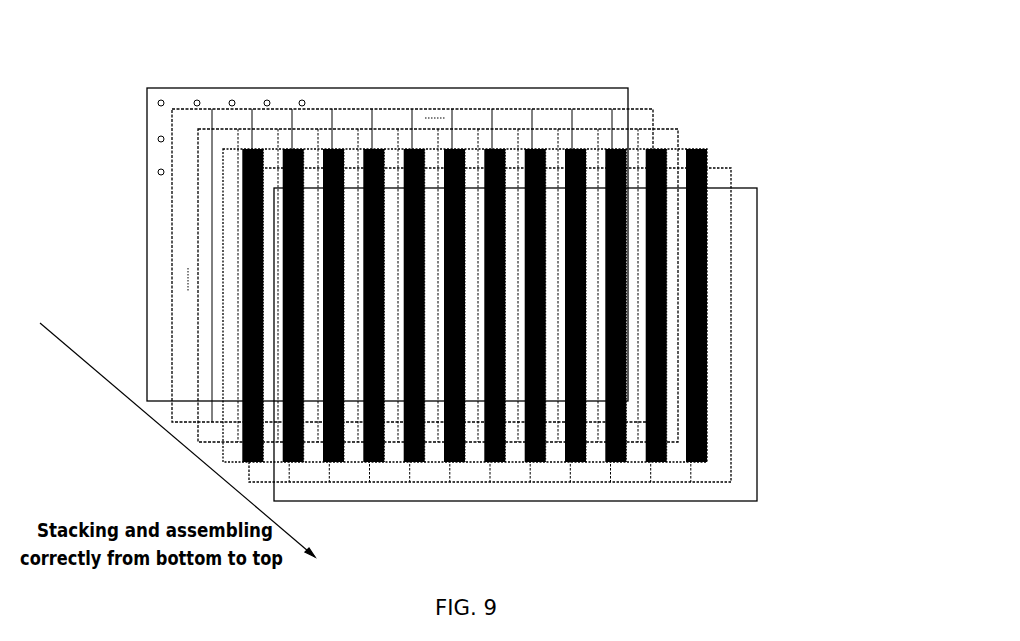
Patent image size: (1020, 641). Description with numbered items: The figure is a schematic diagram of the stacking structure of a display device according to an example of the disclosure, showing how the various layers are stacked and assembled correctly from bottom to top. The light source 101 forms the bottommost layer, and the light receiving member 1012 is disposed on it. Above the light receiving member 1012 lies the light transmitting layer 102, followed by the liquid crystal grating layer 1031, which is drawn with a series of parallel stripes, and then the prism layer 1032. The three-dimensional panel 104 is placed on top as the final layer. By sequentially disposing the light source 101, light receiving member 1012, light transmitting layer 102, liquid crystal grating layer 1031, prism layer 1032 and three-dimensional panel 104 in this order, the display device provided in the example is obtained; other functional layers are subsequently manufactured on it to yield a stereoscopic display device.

The light source 101 is at (515, 88).
The light receiving member 1012 is at (635, 115).
The light transmitting layer 102 is at (668, 148).
The liquid crystal grating layer 1031 is at (707, 245).
The prism layer 1032 is at (728, 343).
The 3D panel 104 is at (757, 433).